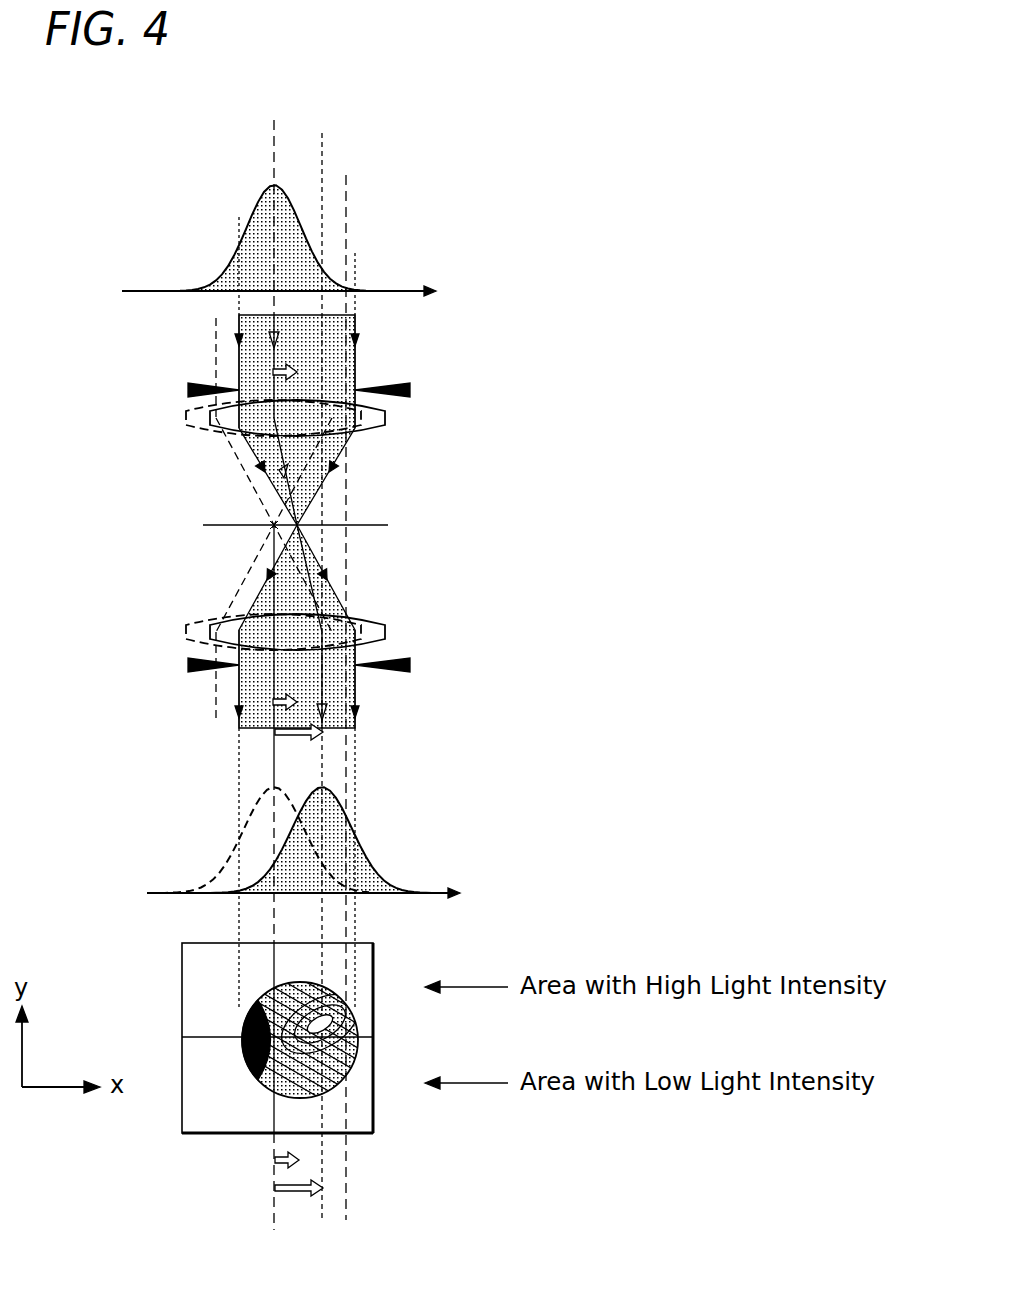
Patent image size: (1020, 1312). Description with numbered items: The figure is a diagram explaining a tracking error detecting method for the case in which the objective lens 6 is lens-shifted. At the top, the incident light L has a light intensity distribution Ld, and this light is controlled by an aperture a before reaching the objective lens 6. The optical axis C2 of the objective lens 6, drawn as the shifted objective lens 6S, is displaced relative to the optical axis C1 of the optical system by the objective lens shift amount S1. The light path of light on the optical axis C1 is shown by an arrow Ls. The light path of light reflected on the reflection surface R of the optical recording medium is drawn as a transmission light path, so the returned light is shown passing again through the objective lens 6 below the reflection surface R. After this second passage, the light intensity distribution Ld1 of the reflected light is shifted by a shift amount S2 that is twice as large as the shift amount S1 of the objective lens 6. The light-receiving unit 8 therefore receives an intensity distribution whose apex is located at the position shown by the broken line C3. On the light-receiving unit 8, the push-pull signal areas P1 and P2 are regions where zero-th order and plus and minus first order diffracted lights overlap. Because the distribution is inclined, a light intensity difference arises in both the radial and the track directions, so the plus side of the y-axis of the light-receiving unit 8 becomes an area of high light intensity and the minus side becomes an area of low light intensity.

The optical axis of the optical system C1 is at (274, 140).
The optical axis of the objective lens C2 is at (322, 150).
The broken line showing apex position of shifted light intensity distribution C3 is at (346, 190).
The light intensity distribution Ld is at (300, 232).
The shifted light intensity distribution Ld1 is at (370, 855).
The arrow showing light path on the optical axis Ls is at (274, 312).
The incident light L is at (355, 357).
The aperture a is at (410, 390).
The objective lens 6 is at (186, 416).
The shifted objective lens 6S is at (385, 418).
The reflection surface R is at (378, 518).
The objective lens shift amount S1 is at (282, 700).
The shift amount of light intensity distribution S2 is at (290, 735).
The light-receiving unit 8 is at (367, 1082).
The push-pull signal area P1 is at (353, 1045).
The push-pull signal area P2 is at (262, 1072).